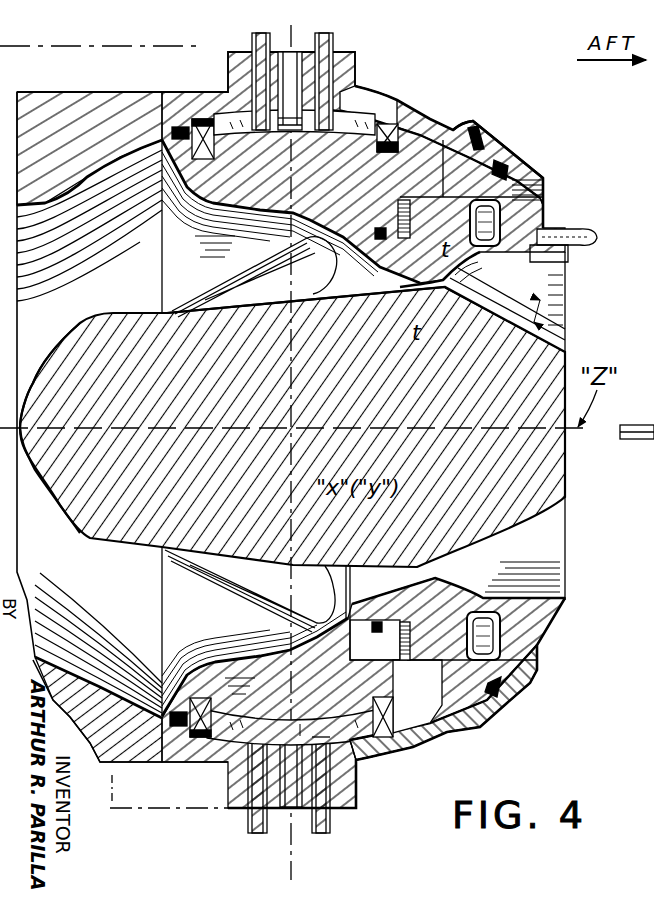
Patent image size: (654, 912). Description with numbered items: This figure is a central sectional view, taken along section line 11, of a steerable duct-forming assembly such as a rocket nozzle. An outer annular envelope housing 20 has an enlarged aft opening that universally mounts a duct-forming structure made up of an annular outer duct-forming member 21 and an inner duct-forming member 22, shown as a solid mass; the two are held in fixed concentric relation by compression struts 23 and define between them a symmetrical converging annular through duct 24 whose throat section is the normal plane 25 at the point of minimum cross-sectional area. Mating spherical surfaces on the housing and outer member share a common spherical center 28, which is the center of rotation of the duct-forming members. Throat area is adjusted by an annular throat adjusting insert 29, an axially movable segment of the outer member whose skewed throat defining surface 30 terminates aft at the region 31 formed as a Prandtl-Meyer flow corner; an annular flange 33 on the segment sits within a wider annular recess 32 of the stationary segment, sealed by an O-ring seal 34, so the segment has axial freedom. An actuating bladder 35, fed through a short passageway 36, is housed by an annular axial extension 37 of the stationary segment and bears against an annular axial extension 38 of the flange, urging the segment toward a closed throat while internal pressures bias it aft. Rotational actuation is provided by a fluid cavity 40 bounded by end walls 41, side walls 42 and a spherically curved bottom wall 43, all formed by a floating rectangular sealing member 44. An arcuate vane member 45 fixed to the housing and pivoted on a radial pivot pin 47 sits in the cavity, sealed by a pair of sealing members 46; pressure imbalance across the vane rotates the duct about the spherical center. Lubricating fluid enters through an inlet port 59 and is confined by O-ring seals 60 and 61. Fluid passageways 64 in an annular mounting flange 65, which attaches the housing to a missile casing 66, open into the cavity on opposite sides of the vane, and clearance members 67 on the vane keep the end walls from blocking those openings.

The section line 11 is at (284, 29).
The outer annular envelope housing 20 is at (410, 97).
The annular outer duct-forming member 21 is at (205, 188).
The inner duct-forming member 22 is at (85, 536).
The compression struts 23 is at (200, 296).
The converging annular through duct 24 is at (263, 243).
The throat section plane 25 is at (433, 313).
The spherical center 28 is at (300, 425).
The annular throat adjusting insert 29 is at (505, 596).
The throat defining surface 30 is at (306, 308).
The smallest-opening region 31 is at (435, 285).
The annular recess 32 is at (407, 658).
The annular flange 33 is at (452, 648).
The O-ring seal 34 is at (373, 620).
The bladder 35 is at (502, 218).
The passageway 36 is at (568, 258).
The annular axial extension 37 is at (480, 255).
The annular axial extension 38 is at (470, 200).
The fluid cavity 40 is at (350, 118).
The end walls 41 is at (176, 157).
The side walls 42 is at (294, 122).
The bottom wall 43 is at (336, 128).
The floating rectangular sealing member 44 is at (386, 152).
The arcuate vane member 45 is at (275, 130).
The sealing members 46 is at (360, 757).
The pivot pin 47 is at (298, 118).
The inlet port 59 is at (480, 128).
The O-ring seal 60 is at (510, 170).
The O-ring seal 61 is at (182, 128).
The fluid passageways 64 is at (242, 80).
The annular mounting flange 65 is at (337, 803).
The missile casing 66 is at (62, 45).
The clearance members 67 is at (246, 752).